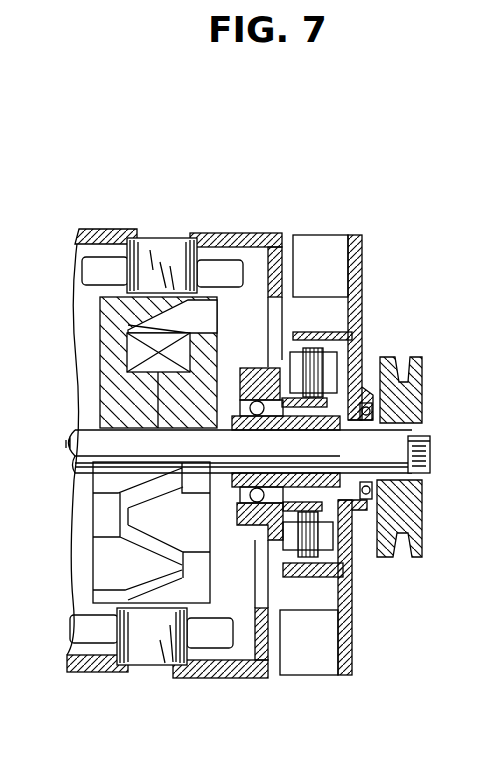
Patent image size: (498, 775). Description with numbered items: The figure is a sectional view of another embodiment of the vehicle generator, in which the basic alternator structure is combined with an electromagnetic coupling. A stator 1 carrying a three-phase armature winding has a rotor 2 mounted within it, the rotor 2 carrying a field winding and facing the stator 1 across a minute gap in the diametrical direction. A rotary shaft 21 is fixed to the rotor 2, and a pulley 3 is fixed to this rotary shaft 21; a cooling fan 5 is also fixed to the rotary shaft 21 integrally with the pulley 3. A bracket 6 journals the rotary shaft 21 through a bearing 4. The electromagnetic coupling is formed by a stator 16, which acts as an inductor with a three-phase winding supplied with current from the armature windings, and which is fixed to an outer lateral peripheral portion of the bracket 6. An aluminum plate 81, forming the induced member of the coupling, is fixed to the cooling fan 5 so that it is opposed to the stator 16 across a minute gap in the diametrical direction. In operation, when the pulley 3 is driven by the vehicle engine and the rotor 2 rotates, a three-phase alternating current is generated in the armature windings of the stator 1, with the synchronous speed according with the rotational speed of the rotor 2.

The stator 1 is at (150, 667).
The rotor 2 is at (108, 572).
The pulley 3 is at (415, 558).
The bearing 4 is at (362, 398).
The cooling fan 5 is at (314, 677).
The bracket 6 is at (282, 230).
The stator of electromagnetic coupling 16 is at (328, 368).
The rotary shaft 21 is at (383, 447).
The aluminum plate 81 is at (322, 334).